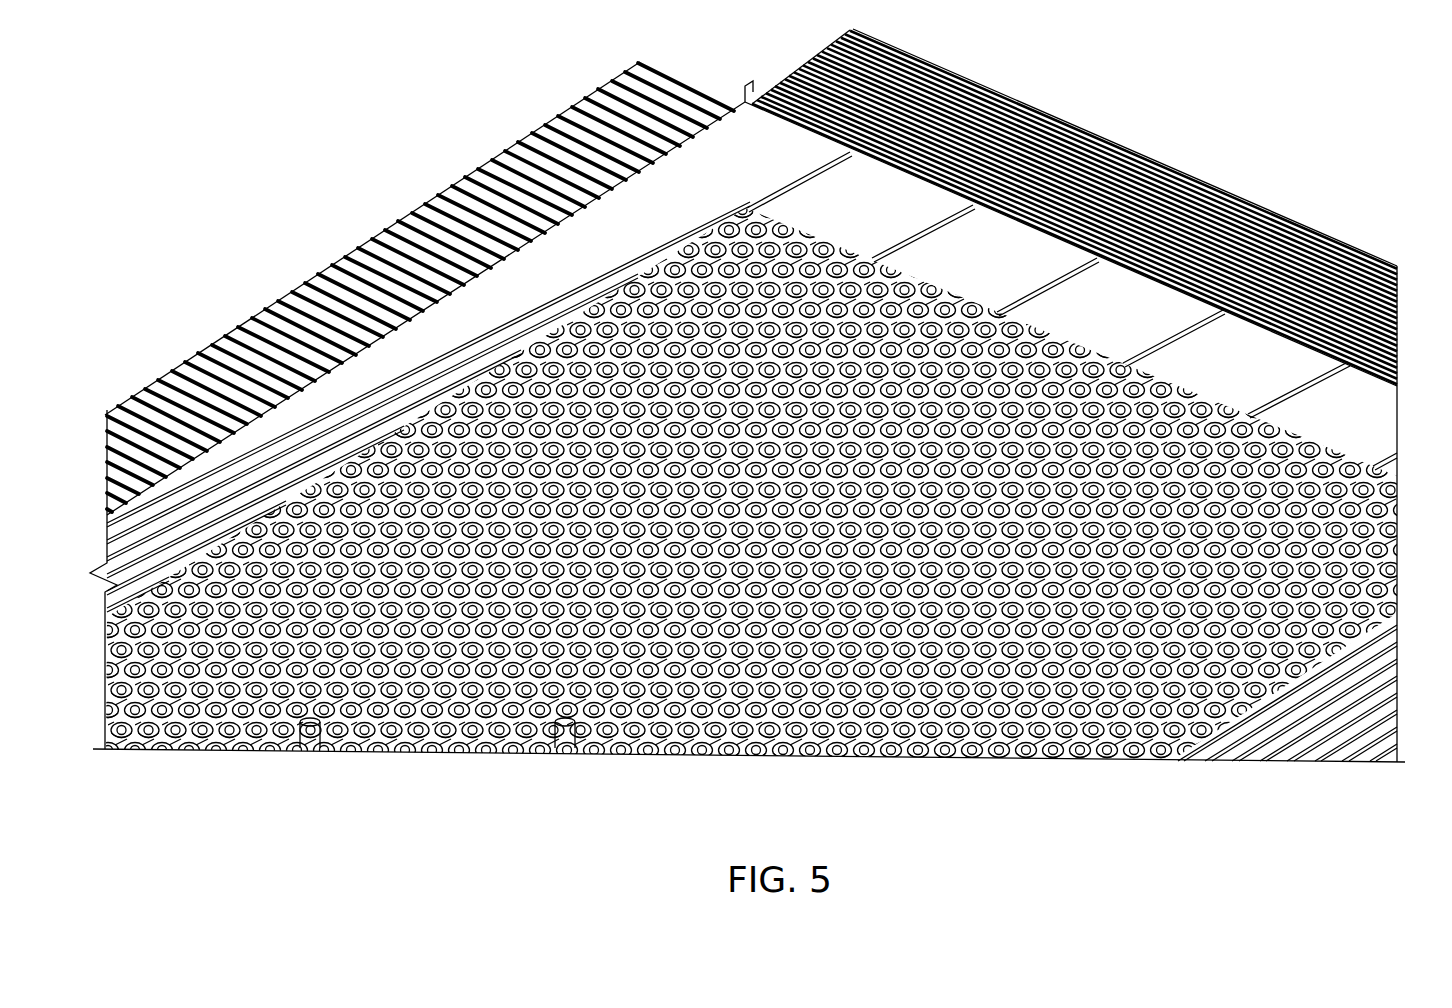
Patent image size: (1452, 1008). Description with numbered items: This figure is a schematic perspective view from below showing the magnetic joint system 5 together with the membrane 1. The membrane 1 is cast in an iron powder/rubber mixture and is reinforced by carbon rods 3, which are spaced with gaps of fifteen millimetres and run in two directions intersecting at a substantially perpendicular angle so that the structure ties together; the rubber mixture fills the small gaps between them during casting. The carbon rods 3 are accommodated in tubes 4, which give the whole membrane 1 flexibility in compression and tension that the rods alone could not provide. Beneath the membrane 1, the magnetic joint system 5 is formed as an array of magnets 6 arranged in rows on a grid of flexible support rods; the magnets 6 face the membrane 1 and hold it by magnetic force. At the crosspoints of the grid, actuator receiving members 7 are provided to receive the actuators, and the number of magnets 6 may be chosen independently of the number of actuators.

The membrane 1 is at (1360, 437).
The carbon rods 3 is at (751, 270).
The tubes 4 is at (500, 210).
The magnetic joint system 5 is at (1095, 775).
The magnets 6 is at (373, 748).
The actuator receiving members 7 is at (310, 752).